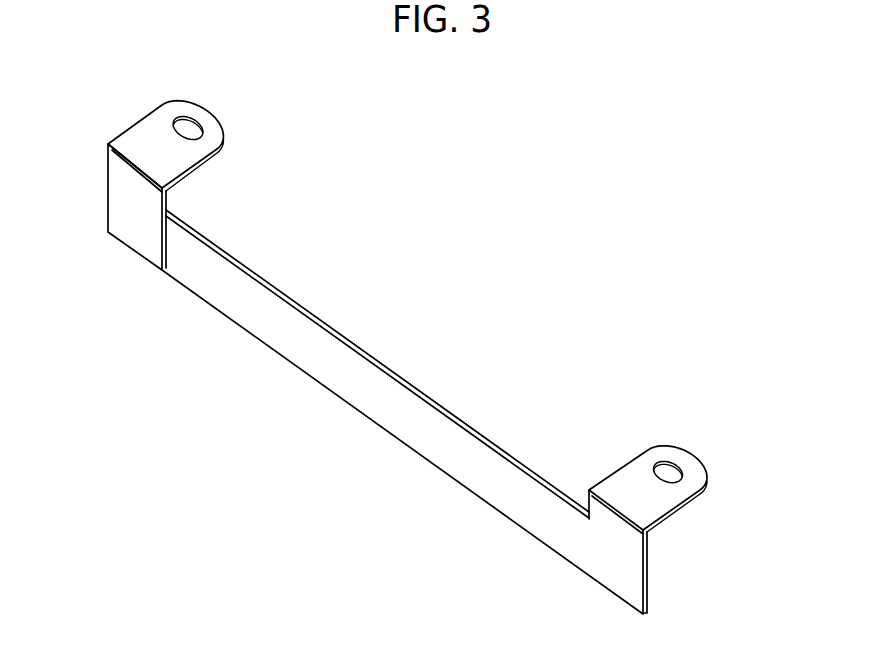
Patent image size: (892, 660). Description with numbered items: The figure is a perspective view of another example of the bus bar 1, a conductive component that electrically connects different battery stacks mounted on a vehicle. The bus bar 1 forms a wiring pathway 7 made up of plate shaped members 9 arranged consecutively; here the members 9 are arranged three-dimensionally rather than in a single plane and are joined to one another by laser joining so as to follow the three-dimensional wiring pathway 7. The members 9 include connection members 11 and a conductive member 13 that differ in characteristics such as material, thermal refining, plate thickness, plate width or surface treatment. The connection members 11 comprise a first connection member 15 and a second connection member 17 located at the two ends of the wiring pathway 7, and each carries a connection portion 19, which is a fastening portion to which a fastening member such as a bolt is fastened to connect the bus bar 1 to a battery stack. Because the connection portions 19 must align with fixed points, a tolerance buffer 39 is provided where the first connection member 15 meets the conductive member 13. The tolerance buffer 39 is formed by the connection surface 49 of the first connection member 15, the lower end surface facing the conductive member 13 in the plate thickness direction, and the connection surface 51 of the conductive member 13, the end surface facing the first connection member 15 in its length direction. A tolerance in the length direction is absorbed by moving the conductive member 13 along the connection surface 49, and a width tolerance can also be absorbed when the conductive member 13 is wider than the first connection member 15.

The bus bar 1 is at (459, 210).
The wiring pathway 7 is at (293, 403).
The plate shaped member 9 is at (145, 127).
The conductive member 13 is at (132, 233).
The connection member 11 is at (441, 336).
The first connection member 15 is at (182, 155).
The second connection member 17 is at (662, 498).
The connection portion 19 is at (198, 124).
The tolerance buffer 39 is at (188, 211).
The connection surface 49 is at (173, 187).
The connection surface 51 is at (133, 150).